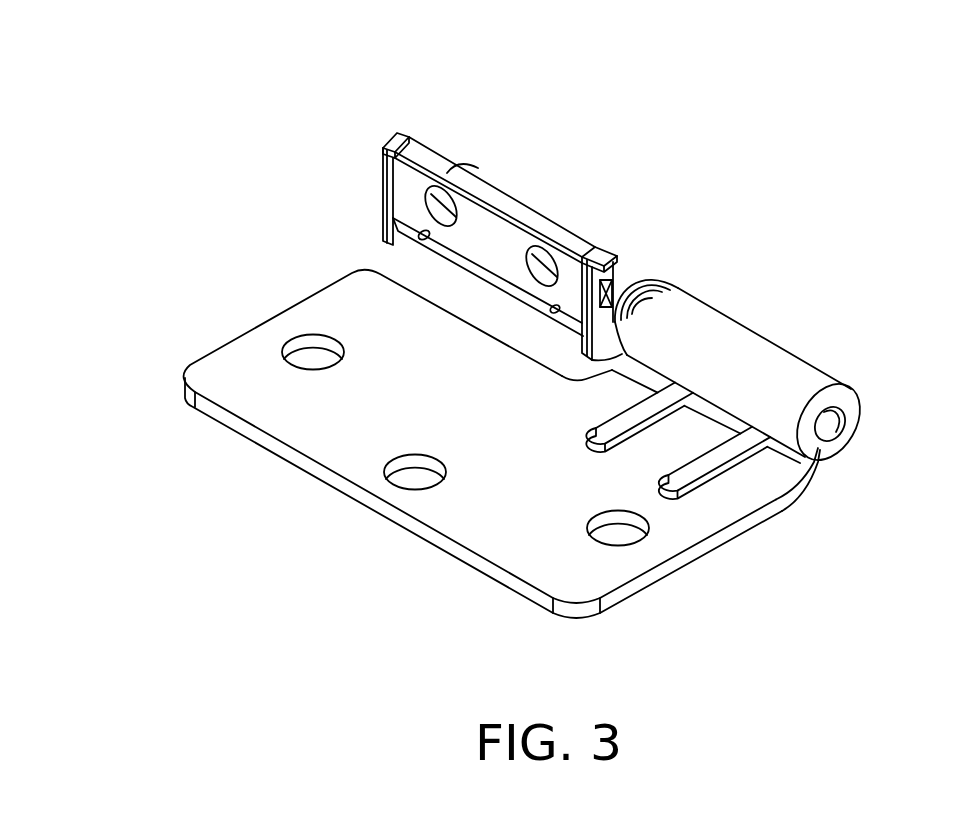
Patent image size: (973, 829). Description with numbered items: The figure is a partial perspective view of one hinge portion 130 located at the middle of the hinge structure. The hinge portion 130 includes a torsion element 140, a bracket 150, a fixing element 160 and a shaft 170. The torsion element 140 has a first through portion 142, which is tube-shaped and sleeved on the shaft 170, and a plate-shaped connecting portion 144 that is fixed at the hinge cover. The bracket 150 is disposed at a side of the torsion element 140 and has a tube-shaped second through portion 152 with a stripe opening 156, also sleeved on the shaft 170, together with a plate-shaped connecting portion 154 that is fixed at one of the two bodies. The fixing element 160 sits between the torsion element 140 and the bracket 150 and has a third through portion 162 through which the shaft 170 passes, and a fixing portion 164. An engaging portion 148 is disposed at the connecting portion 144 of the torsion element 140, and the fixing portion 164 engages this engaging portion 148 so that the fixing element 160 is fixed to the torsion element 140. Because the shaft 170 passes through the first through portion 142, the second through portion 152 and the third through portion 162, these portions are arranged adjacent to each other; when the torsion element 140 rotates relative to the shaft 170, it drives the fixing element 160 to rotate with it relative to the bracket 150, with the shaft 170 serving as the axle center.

The hinge portion 130 is at (760, 100).
The torsion element 140 is at (473, 123).
The first through portion 142 is at (628, 275).
The connecting portion 144 is at (502, 220).
The engaging portion 148 is at (607, 278).
The bracket 150 is at (815, 313).
The second through portion 152 is at (802, 384).
The connecting portion 154 is at (681, 532).
The stripe opening 156 is at (818, 456).
The fixing element 160 is at (714, 220).
The third through portion 162 is at (668, 283).
The fixing portion 164 is at (636, 308).
The shaft 170 is at (835, 426).